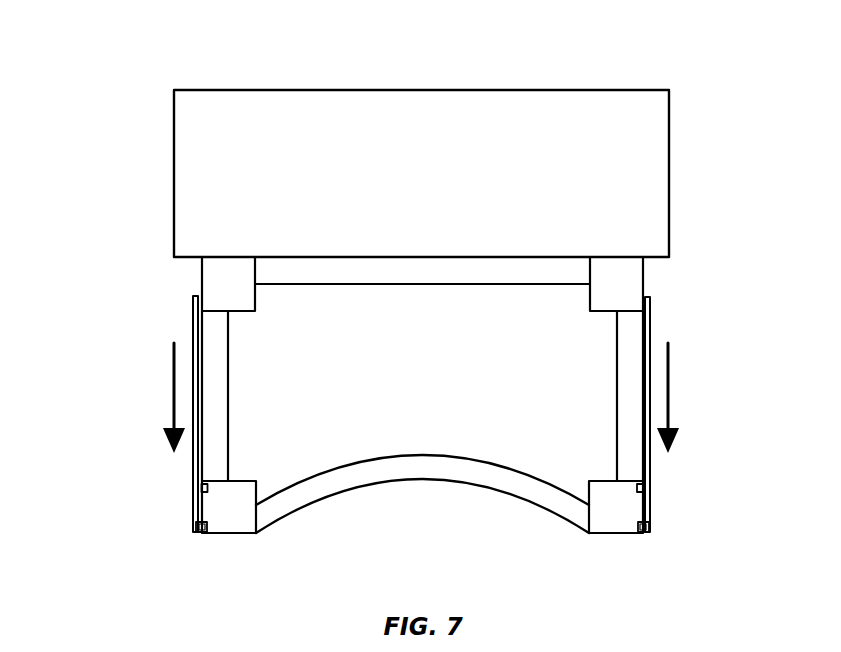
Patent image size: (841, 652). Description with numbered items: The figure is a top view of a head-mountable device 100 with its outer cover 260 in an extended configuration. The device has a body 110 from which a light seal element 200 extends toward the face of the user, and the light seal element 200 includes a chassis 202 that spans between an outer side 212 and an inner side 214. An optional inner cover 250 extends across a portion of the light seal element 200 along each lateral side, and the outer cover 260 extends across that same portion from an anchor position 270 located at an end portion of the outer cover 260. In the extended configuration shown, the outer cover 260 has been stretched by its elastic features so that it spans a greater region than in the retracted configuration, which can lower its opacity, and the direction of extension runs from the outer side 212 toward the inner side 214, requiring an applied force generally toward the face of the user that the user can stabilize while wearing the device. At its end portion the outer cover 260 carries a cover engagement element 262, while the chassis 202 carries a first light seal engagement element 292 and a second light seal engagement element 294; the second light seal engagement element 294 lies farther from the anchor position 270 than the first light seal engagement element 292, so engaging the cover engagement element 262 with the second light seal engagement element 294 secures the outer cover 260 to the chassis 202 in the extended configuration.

The head-mountable device 100 is at (112, 42).
The display 110 is at (224, 90).
The light seal element 200 is at (377, 304).
The chassis 202 is at (248, 312).
The outer side 212 is at (422, 275).
The inner side 214 is at (420, 463).
The inner cover 250 is at (220, 398).
The outer cover 260 is at (193, 338).
The anchor position 270 is at (193, 309).
The first light seal engagement element 292 is at (205, 489).
The second light seal engagement element 294 is at (207, 533).
The cover engagement element 262 is at (197, 524).